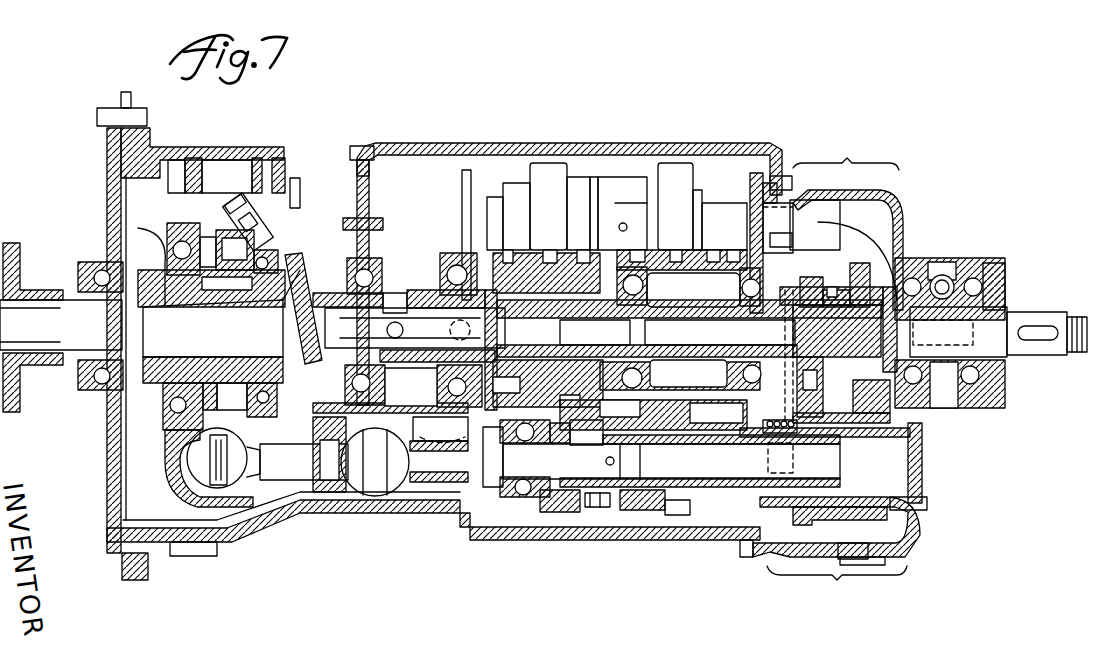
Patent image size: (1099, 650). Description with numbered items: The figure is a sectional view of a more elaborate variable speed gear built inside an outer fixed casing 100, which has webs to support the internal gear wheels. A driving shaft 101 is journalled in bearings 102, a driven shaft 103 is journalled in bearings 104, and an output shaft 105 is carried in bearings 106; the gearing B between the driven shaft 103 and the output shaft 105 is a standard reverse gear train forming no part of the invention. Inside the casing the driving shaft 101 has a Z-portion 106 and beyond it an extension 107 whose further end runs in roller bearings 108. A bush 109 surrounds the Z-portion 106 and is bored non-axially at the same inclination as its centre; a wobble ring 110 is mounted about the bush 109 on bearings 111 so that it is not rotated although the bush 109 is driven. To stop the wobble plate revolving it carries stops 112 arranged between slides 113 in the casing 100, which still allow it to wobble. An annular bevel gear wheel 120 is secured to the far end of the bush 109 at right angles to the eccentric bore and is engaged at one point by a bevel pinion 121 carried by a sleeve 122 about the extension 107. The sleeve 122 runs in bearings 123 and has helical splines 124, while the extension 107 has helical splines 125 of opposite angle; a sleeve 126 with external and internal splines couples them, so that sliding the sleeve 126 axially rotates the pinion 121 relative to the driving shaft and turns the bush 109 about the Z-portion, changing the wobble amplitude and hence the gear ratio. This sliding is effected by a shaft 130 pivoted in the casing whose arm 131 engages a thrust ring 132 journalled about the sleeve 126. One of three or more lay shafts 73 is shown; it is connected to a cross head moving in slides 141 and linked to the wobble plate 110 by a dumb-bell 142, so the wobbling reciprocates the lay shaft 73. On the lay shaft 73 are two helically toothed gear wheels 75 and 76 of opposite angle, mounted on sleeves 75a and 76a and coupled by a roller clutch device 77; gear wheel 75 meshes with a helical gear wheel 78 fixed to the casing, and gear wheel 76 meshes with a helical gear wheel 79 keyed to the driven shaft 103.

The casing 100 is at (546, 143).
The reverse gear train B is at (837, 371).
The driving shaft 101 is at (61, 325).
The bearings 102 is at (92, 262).
The driven shaft 103 is at (750, 355).
The bearings 104 is at (680, 328).
The output shaft 105 is at (1037, 312).
The Z-portion 106 is at (972, 240).
The extension 107 is at (415, 327).
The roller bearings 108 is at (479, 328).
The bush 109 is at (170, 250).
The wobble ring 110 is at (195, 222).
The bearings 111 is at (172, 226).
The stop 112 is at (243, 198).
The slide 113 is at (298, 196).
The bevel gear wheel 120 is at (310, 260).
The bevel pinion 121 is at (296, 300).
The sleeve 122 is at (383, 290).
The bearings 123 is at (380, 262).
The helical splines 124 is at (395, 292).
The helical splines 125 is at (415, 335).
The sleeve 126 is at (450, 255).
The shaft 130 is at (455, 430).
The arm 131 is at (413, 386).
The thrust ring 132 is at (466, 240).
The slides 141 is at (345, 497).
The dumb-bell 142 is at (287, 467).
The lay shaft 73 is at (671, 465).
The roller clutch device 77 is at (593, 445).
The helically toothed gear wheel 78 is at (677, 250).
The helical gear wheel 79 is at (552, 250).
The gear wheel 75 is at (682, 516).
The sleeve 75a is at (640, 512).
The gear wheel 76 is at (558, 513).
The sleeve 76a is at (597, 508).